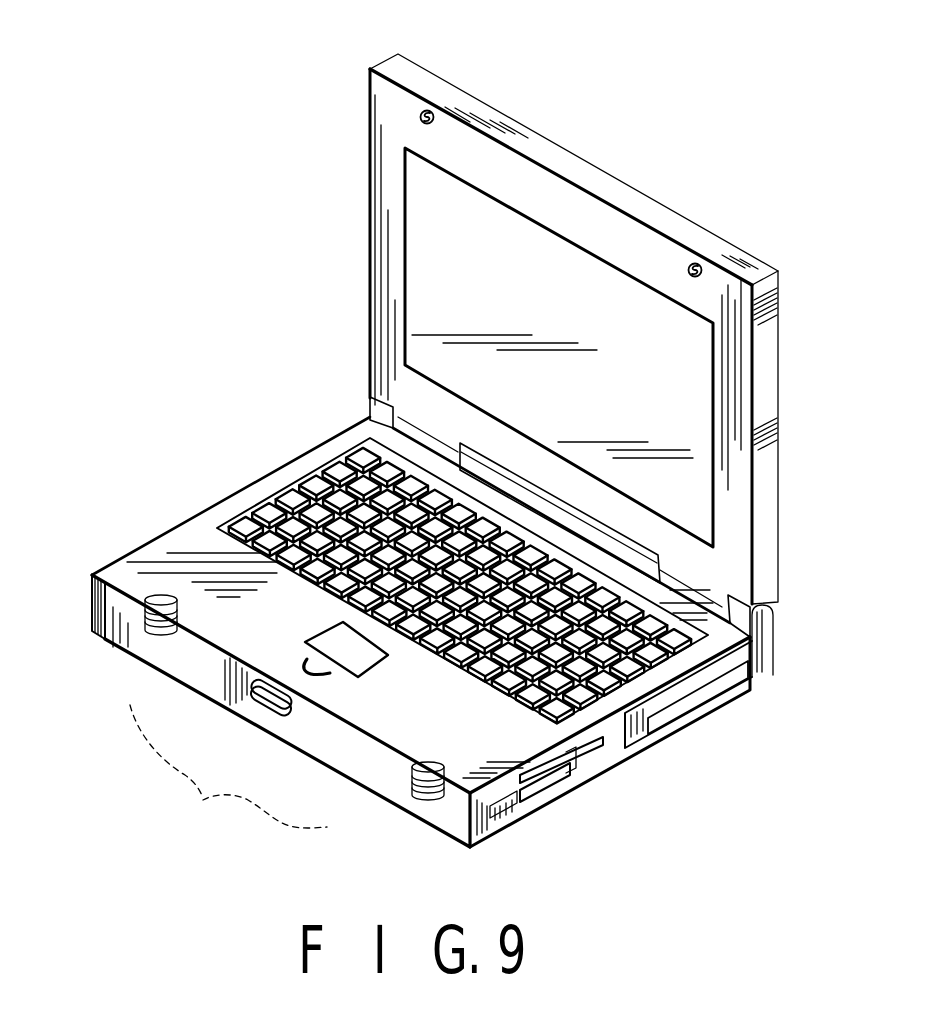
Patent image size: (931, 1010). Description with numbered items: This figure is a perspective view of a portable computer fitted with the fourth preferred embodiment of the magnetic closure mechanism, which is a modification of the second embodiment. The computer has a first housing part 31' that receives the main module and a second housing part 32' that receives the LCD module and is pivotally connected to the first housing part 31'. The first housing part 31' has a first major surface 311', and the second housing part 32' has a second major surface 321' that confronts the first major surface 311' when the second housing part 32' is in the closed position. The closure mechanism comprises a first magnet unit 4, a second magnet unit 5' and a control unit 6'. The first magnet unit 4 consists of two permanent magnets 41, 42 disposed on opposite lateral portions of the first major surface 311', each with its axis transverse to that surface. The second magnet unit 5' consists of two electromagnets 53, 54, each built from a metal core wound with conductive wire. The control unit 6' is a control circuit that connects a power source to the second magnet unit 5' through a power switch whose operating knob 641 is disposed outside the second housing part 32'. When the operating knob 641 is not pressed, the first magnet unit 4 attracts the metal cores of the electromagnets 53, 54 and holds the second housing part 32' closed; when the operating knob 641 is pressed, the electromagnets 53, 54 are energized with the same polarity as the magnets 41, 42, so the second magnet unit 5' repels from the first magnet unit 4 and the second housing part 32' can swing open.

The first magnet unit 4 is at (588, 144).
The permanent magnet 41 is at (425, 110).
The permanent magnet 42 is at (722, 219).
The first housing part 31' is at (580, 344).
The first major surface 311' is at (508, 347).
The second housing part 32' is at (393, 632).
The second major surface 321' is at (421, 605).
The second magnet unit 5' is at (228, 766).
The electromagnet 53 is at (428, 783).
The electromagnet 54 is at (163, 633).
The control unit 6' is at (242, 738).
The operating knob 641 is at (268, 705).